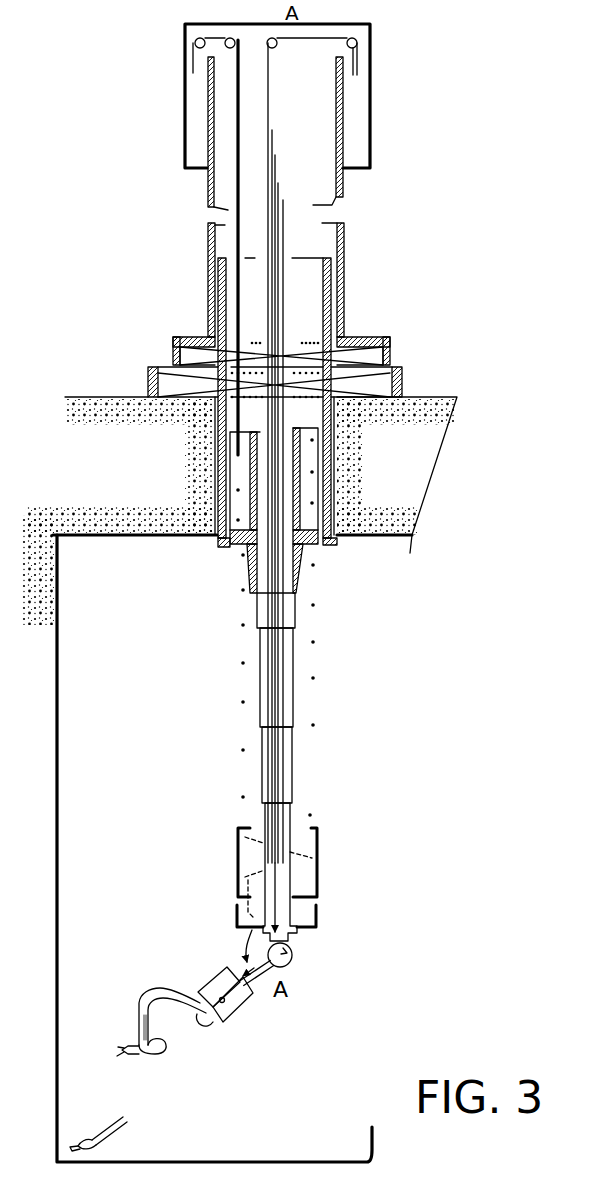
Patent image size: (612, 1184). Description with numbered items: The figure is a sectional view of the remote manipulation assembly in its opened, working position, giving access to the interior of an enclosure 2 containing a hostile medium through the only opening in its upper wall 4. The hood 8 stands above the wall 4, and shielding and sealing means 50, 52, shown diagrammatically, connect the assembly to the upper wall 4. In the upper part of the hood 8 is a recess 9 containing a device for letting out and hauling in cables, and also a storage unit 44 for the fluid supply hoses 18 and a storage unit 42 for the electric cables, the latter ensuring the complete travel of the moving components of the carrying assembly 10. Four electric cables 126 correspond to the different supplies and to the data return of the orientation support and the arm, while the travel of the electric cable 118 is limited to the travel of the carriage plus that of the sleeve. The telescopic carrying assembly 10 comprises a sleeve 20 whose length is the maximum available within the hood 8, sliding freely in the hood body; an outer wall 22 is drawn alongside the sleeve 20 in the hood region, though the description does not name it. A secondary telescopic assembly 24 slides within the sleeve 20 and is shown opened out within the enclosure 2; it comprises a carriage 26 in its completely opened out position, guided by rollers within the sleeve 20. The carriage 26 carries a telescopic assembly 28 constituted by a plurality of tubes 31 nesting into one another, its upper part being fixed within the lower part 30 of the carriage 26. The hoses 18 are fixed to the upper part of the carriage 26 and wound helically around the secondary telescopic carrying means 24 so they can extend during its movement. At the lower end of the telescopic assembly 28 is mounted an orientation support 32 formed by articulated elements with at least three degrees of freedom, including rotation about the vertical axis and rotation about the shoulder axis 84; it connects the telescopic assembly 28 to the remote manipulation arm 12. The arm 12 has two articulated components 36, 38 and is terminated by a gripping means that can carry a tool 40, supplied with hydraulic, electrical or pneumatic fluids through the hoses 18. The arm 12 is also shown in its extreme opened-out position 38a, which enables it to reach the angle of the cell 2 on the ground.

The enclosure 2 is at (214, 848).
The upper wall 4 is at (239, 511).
The hood 8 is at (340, 186).
The recess 9 is at (343, 81).
The telescopic carrying assembly 10 is at (369, 709).
The remote manipulation arm 12 is at (218, 978).
The hoses 18 is at (312, 765).
The sleeve 20 is at (333, 270).
The outer guide tube 22 is at (340, 254).
The secondary telescopic assembly 24 is at (295, 622).
The carriage 26 is at (305, 545).
The telescopic assembly 28 is at (288, 694).
The lower part of carriage 30 is at (247, 593).
The tubes 31 is at (310, 826).
The orientation support 32 is at (255, 992).
The articulated component 36 is at (163, 982).
The articulated component 38 is at (157, 1030).
The extreme opened-out position 38a is at (124, 1130).
The tool 40 is at (121, 1043).
The storage unit for electric cables 42 is at (360, 132).
The storage unit 44 is at (195, 151).
The shielding and sealing means 50 is at (370, 337).
The shielding and sealing means 52 is at (400, 380).
The shoulder axis 84 is at (290, 954).
The electric cable 118 is at (237, 235).
The electric cables 126 is at (284, 152).